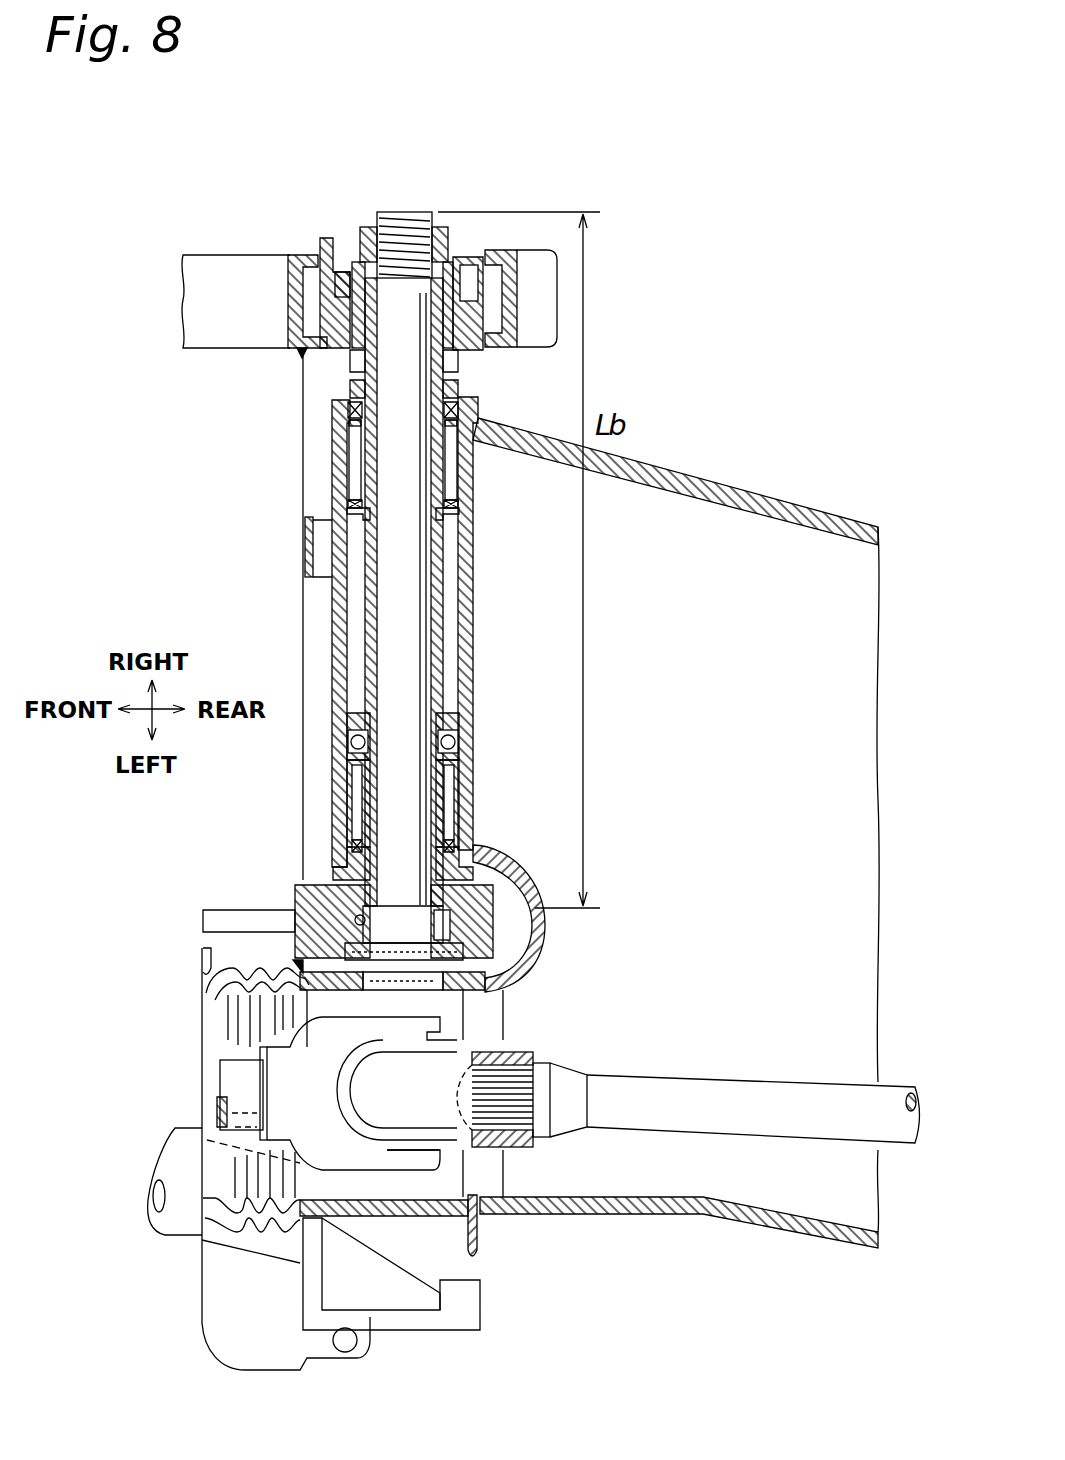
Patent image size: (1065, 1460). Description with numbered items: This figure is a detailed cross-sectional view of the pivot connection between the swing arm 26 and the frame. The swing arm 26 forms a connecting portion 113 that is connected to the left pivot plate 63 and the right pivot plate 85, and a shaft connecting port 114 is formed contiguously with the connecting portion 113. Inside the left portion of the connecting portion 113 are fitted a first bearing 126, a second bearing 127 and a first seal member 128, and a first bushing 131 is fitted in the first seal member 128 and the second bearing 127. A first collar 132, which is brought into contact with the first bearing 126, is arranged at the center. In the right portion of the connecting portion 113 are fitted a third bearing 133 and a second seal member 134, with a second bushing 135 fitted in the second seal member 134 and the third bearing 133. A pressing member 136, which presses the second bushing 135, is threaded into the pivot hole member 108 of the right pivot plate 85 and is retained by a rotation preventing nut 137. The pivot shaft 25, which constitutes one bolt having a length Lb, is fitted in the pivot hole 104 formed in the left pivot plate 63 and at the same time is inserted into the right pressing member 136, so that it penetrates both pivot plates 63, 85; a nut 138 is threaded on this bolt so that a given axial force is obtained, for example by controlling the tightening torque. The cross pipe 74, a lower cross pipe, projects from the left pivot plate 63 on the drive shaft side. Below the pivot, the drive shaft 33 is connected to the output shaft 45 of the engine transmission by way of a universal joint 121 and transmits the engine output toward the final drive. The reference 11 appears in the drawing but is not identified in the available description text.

The steering handle 11 is at (198, 263).
The right pivot plate 85 is at (318, 253).
The rotation preventing nut 137 is at (342, 272).
The nut 138 is at (366, 228).
The pivot hole member 108 is at (290, 296).
The pressing member 136 is at (350, 363).
The second bushing 135 is at (350, 388).
The second seal member 134 is at (348, 410).
The connecting portion 113 is at (336, 478).
The third bearing 133 is at (347, 490).
The cross pipe (lower cross pipe) 74 is at (310, 553).
The pivot shaft 25 is at (388, 606).
The first collar 132 is at (372, 655).
The first bearing 126 is at (350, 738).
The second bearing 127 is at (352, 798).
The first seal member 128 is at (352, 845).
The first bushing 131 is at (340, 877).
The pivot hole 104 is at (297, 902).
The left pivot plate 63 is at (293, 943).
The output shaft 45 is at (233, 1060).
The universal joint 121 is at (222, 1073).
The drive shaft 33 is at (690, 1137).
The shaft connecting port 114 is at (482, 1200).
The swing arm 26 is at (696, 385).